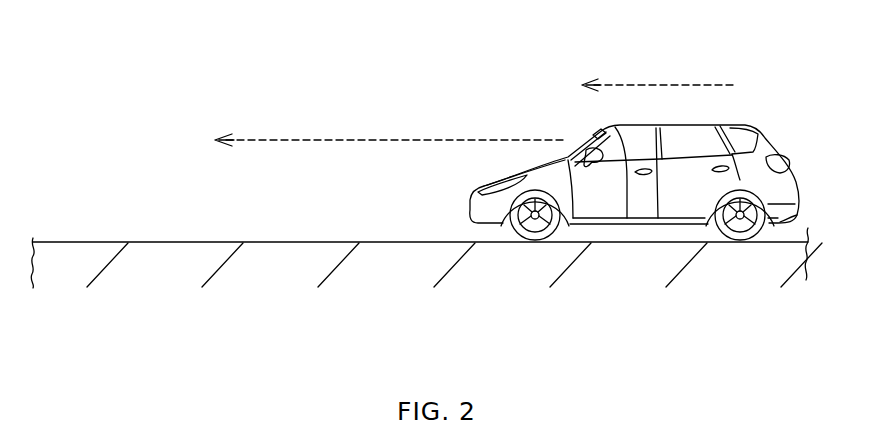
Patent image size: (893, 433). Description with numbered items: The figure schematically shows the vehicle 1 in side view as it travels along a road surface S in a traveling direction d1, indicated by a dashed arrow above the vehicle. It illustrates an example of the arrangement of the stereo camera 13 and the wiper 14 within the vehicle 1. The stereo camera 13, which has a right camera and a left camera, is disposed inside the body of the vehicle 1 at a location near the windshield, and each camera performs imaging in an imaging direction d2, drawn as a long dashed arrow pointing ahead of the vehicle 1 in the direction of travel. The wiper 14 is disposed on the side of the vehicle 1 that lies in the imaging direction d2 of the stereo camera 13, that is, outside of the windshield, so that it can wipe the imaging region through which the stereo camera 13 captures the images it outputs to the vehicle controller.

The vehicle 1 is at (662, 202).
The stereo camera 13 is at (625, 222).
The wiper 14 is at (575, 145).
The road surface S is at (97, 241).
The traveling direction d1 is at (658, 82).
The imaging direction d2 is at (305, 136).